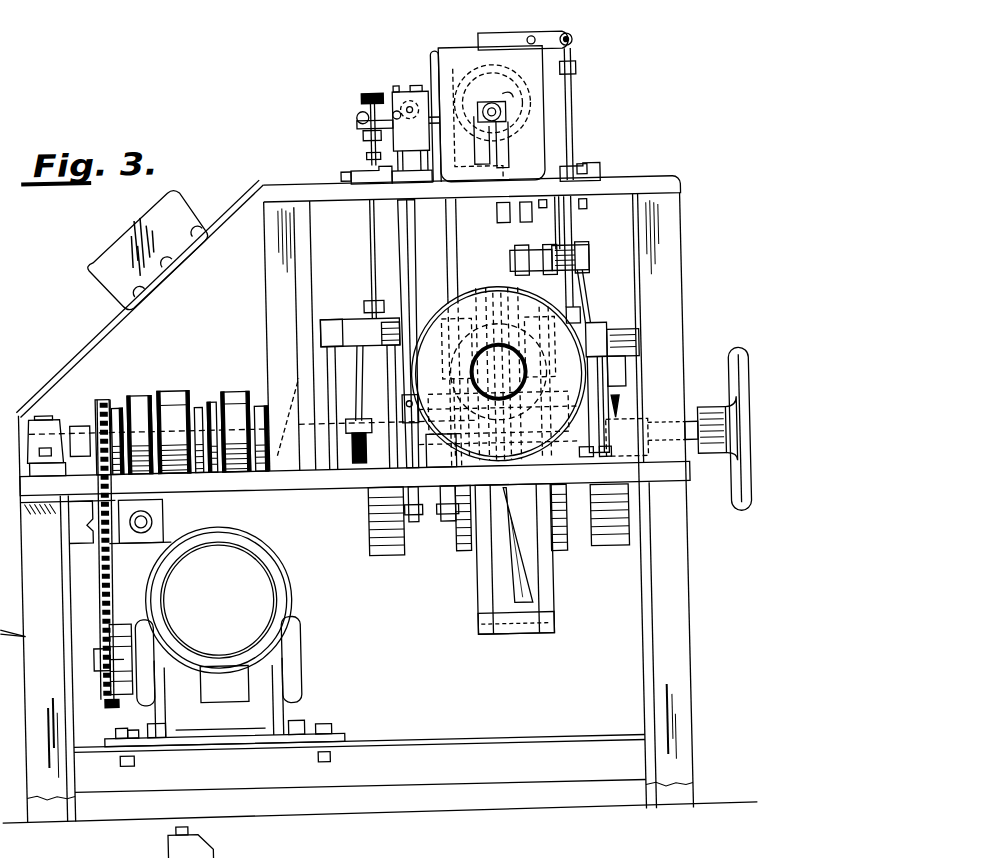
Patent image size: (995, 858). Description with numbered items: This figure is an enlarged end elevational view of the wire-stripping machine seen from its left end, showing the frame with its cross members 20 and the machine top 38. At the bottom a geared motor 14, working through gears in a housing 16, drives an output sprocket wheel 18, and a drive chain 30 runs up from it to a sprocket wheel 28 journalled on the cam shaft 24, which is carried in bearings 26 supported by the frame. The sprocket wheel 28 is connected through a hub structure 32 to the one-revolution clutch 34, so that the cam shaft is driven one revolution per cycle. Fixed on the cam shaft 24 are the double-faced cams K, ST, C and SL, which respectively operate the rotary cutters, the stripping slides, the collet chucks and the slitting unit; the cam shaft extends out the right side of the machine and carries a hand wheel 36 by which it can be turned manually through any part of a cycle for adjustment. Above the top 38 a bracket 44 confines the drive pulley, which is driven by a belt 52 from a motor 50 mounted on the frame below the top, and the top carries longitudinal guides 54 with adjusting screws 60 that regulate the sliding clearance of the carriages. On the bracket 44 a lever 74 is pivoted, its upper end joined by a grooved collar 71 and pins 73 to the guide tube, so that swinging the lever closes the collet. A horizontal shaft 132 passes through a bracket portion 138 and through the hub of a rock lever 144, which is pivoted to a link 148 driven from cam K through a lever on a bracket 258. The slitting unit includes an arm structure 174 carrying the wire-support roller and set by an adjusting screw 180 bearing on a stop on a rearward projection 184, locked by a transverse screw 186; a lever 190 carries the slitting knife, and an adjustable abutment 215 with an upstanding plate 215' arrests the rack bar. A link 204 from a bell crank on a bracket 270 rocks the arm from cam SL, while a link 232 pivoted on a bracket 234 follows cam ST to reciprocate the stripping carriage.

The geared motor 14 is at (262, 568).
The housing 16 is at (296, 645).
The output sprocket wheel 18 is at (102, 700).
The cross members 20 is at (270, 252).
The cam shaft 24 is at (80, 418).
The bearings 26 is at (50, 409).
The sprocket wheel 28 is at (112, 398).
The drive chain 30 is at (100, 577).
The hub structure 32 is at (126, 402).
The one-revolution clutch 34 is at (185, 388).
The hand wheel 36 is at (737, 362).
The machine top 38 is at (630, 184).
The bracket 44 is at (441, 66).
The motor 50 is at (490, 298).
The belt 52 is at (452, 262).
The guides 54 is at (368, 172).
The adjusting screws 60 is at (348, 175).
The grooved collar 71 is at (497, 106).
The pins 73 is at (507, 106).
The lever 74 is at (514, 140).
The arm structure 174 is at (490, 124).
The horizontal shaft 132 is at (543, 39).
The bracket portion 138 is at (527, 38).
The rock lever 144 is at (577, 37).
The link 148 is at (581, 108).
The adjusting screw 180 is at (370, 96).
The rearward projection 184 is at (373, 145).
The transverse screw 186 is at (365, 117).
The lever 190 is at (433, 92).
The link 204 is at (376, 250).
The adjustable abutment 215 is at (387, 334).
The upstanding plate 215' is at (388, 76).
The link 232 is at (552, 612).
The bracket 234 is at (548, 590).
The bracket 258 is at (612, 392).
The bracket 270 is at (330, 372).
The cam SL is at (378, 556).
The cam ST is at (460, 554).
The cam C is at (560, 556).
The cam K is at (596, 552).